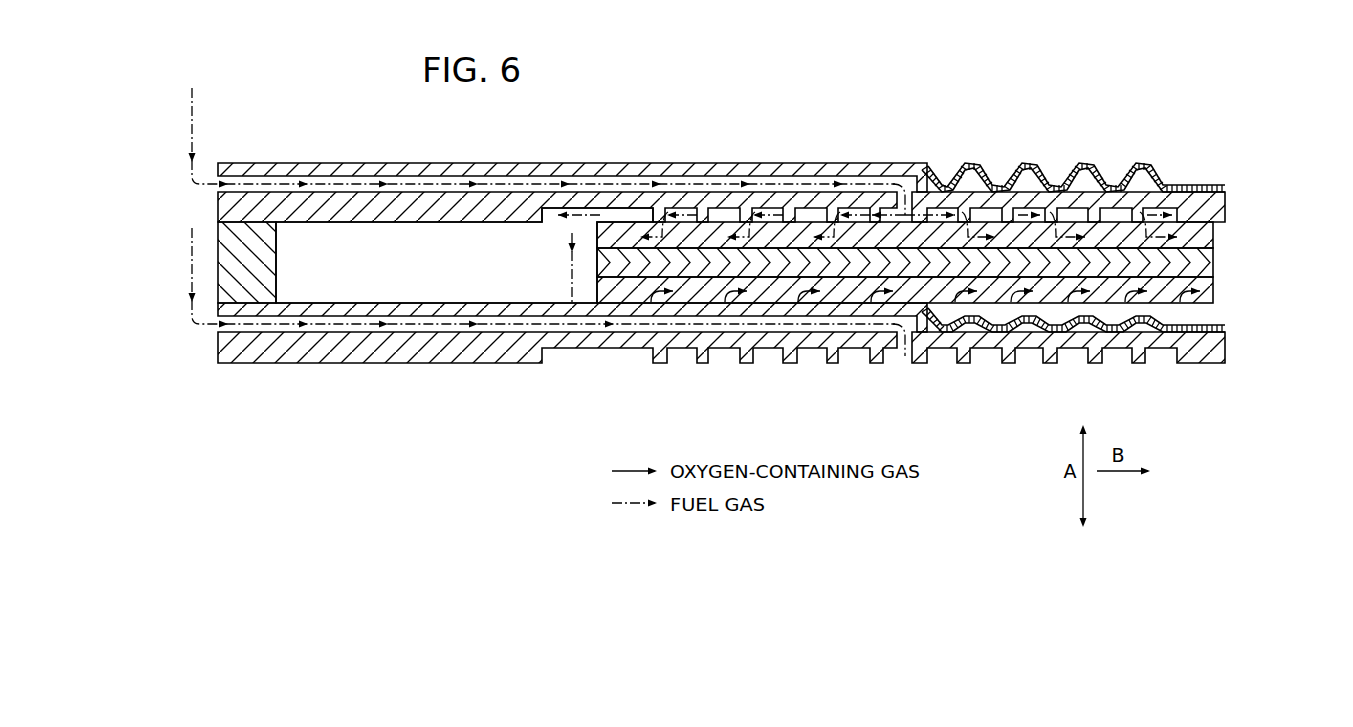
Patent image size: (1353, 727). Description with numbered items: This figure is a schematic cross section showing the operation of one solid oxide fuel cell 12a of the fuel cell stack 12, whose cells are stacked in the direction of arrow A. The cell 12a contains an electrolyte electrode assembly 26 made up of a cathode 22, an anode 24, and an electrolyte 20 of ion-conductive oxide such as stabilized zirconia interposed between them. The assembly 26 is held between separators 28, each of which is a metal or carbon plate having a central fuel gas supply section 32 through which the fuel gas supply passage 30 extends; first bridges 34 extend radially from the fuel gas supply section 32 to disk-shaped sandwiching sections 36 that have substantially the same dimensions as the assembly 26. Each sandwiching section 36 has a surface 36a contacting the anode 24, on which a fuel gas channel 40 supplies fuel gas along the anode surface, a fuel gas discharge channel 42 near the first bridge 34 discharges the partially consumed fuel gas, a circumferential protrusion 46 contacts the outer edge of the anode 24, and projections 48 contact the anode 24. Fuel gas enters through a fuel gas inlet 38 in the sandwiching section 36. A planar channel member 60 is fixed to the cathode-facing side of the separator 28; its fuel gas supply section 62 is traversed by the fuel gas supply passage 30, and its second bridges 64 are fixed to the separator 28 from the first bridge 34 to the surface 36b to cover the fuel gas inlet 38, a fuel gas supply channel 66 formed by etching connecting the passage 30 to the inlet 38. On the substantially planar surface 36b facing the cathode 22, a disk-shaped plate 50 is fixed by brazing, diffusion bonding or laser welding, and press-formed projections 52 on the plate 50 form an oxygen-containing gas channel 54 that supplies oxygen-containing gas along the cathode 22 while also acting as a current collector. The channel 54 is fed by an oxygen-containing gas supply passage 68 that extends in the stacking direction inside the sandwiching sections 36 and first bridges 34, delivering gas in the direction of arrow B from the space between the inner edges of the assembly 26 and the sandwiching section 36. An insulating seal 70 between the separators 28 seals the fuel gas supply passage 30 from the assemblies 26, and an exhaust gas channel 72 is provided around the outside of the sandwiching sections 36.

The solid oxide fuel cell 12a is at (791, 77).
The fuel cell stack 12 is at (835, 77).
The electrolyte 20 is at (669, 262).
The cathode 22 is at (707, 290).
The anode 24 is at (641, 228).
The electrolyte electrode assembly 26 is at (728, 117).
The separator 28 is at (1230, 198).
The fuel gas supply passage 30 is at (195, 198).
The fuel gas supply section 32 is at (229, 357).
The first bridge 34 is at (467, 214).
The sandwiching section 36 is at (938, 368).
The surface 36a is at (1160, 195).
The substantially planar surface 36b is at (1147, 190).
The fuel gas inlet 38 is at (895, 197).
The fuel gas channel 40 is at (1035, 213).
The fuel gas discharge channel 42 is at (600, 212).
The circumferential protrusion 46 is at (1200, 214).
The projections 48 is at (1095, 362).
The plate 50 is at (1003, 165).
The projections 52 is at (1138, 163).
The oxygen-containing gas channel 54 is at (1015, 333).
The channel member 60 is at (578, 158).
The fuel gas supply section 62 is at (268, 170).
The second bridge 64 is at (467, 170).
The fuel gas supply channel 66 is at (351, 184).
The oxygen-containing gas supply passage 68 is at (437, 247).
The insulating seal 70 is at (268, 253).
The exhaust gas channel 72 is at (1217, 264).